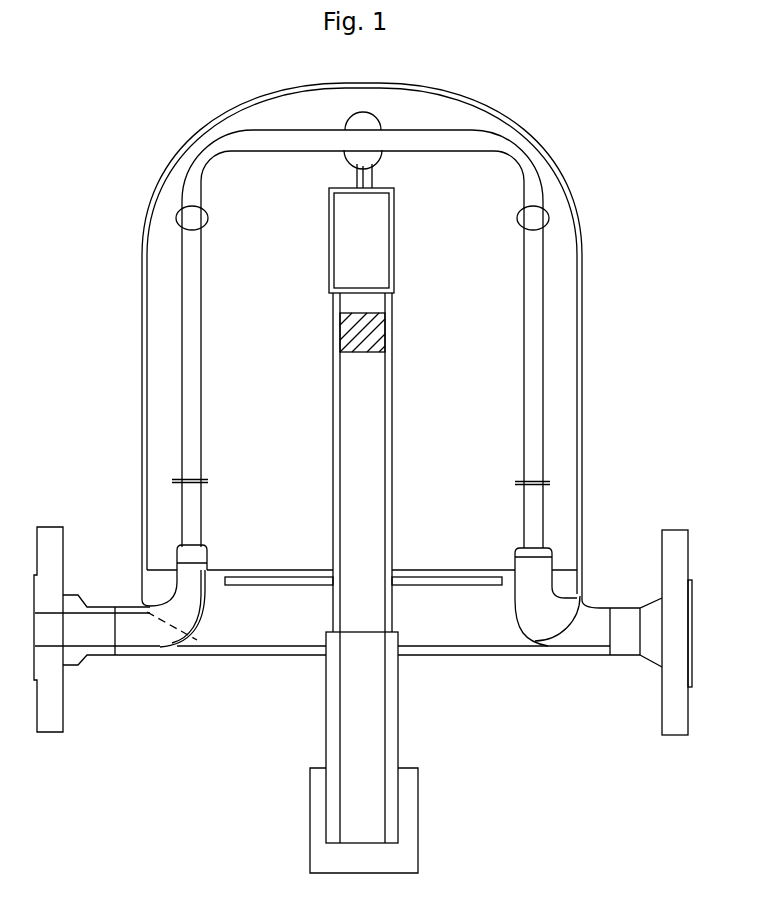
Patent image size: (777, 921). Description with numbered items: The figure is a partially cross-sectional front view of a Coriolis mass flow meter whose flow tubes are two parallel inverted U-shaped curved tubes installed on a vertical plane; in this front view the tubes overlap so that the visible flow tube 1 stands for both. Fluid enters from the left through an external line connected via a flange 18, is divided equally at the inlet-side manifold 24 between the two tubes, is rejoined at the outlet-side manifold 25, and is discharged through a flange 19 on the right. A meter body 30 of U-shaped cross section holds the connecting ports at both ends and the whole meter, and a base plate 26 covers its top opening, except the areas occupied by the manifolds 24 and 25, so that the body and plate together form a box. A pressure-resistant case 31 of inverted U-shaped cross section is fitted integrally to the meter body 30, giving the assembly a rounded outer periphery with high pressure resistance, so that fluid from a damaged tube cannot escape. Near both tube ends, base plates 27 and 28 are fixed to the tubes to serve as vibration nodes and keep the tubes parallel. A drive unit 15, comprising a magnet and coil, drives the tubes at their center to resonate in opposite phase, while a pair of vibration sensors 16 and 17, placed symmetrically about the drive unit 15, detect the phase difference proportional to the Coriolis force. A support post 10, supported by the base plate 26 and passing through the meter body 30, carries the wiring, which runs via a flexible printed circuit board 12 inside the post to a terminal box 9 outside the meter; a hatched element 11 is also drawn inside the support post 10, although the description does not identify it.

The flow tube 1 is at (535, 373).
The terminal box 9 is at (403, 858).
The support post 10 is at (392, 470).
The balance weight 11 is at (383, 327).
The flexible printed circuit board 12 is at (372, 177).
The drive unit 15 is at (368, 121).
The vibration sensor 16 is at (178, 218).
The vibration sensor 17 is at (550, 212).
The flange 18 is at (48, 537).
The flange 19 is at (677, 555).
The inlet-side manifold 24 is at (188, 603).
The outlet-side manifold 25 is at (542, 618).
The base plate 26 is at (405, 577).
The base plate 27 is at (187, 478).
The base plate 28 is at (548, 483).
The meter body 30 is at (422, 648).
The pressure-resistant case 31 is at (580, 295).